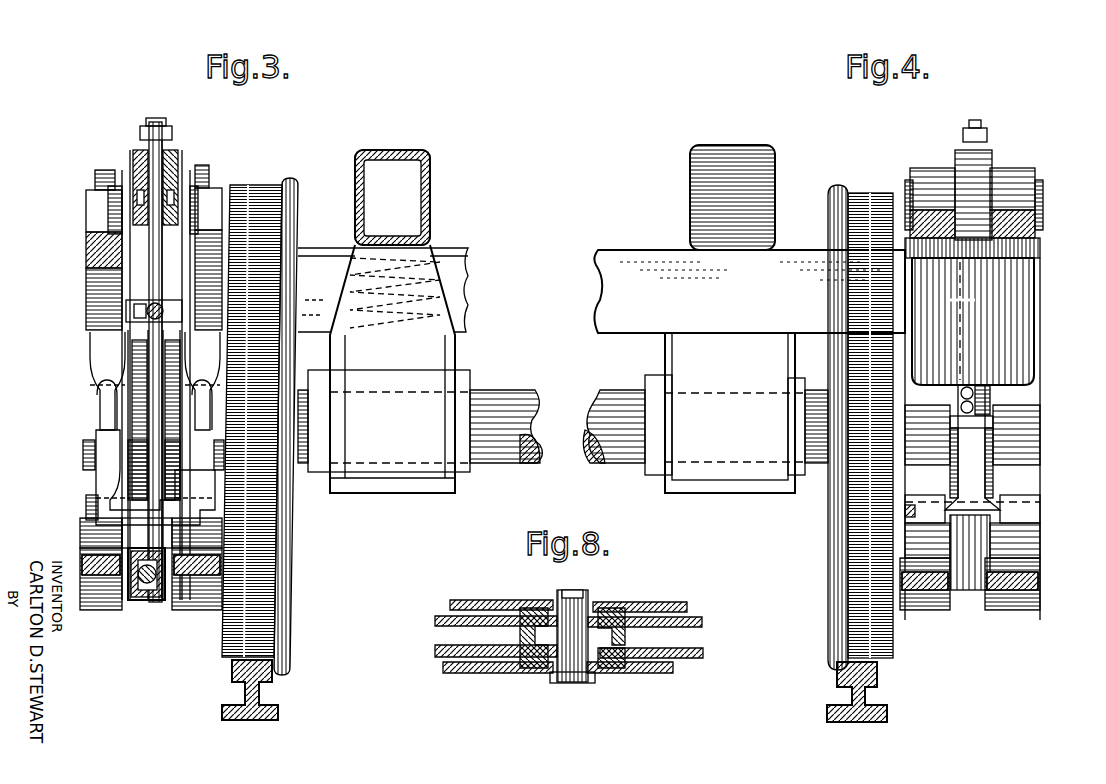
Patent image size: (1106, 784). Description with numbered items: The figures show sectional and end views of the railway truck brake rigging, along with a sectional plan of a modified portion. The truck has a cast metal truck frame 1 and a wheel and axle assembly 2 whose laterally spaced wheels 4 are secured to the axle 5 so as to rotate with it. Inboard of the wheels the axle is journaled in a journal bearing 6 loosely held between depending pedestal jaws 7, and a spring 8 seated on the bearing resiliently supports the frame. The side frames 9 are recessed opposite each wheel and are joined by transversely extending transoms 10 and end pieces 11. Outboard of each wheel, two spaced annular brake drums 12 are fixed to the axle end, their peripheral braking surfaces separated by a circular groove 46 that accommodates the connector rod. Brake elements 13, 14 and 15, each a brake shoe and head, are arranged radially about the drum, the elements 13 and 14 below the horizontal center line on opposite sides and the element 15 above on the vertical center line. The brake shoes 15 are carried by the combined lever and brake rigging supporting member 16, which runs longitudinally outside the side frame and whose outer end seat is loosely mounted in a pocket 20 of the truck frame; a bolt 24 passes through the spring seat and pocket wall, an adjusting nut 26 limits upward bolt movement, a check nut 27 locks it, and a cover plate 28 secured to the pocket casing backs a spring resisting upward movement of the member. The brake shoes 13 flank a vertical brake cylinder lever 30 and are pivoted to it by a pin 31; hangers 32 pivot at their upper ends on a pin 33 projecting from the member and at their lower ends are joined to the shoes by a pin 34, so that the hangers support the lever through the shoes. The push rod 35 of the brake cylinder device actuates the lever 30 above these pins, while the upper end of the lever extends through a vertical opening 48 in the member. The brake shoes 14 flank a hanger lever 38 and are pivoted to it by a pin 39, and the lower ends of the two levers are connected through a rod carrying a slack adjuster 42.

In FIG. 3, the truck frame 1 is at (384, 150).
In FIG. 8, the truck frame 1 is at (535, 672).
In FIG. 4, the truck frame 1 is at (750, 152).
In FIG. 3, the wheel and axle assembly 2 is at (278, 606).
In FIG. 3, the wheel 4 is at (266, 562).
In FIG. 4, the wheel 4 is at (920, 560).
In FIG. 3, the axle 5 is at (500, 395).
In FIG. 4, the axle 5 is at (605, 395).
In FIG. 3, the journal bearing 6 is at (468, 472).
In FIG. 4, the journal bearing 6 is at (652, 476).
In FIG. 3, the pedestal jaw 7 is at (426, 450).
In FIG. 4, the pedestal jaw 7 is at (730, 455).
In FIG. 3, the spring 8 is at (462, 262).
In FIG. 3, the side frame 9 is at (357, 160).
In FIG. 4, the side frame 9 is at (695, 186).
In FIG. 3, the transom 10 is at (460, 290).
In FIG. 4, the end piece 11 is at (668, 265).
In FIG. 3, the brake drum 12 is at (112, 600).
In FIG. 4, the brake drum 12 is at (925, 602).
In FIG. 3, the brake element 13 is at (86, 528).
In FIG. 4, the brake element 14 is at (1020, 545).
In FIG. 3, the brake element 15 is at (88, 240).
In FIG. 4, the brake element 15 is at (925, 185).
In FIG. 3, the combined lever and brake rigging supporting member 16 is at (142, 160).
In FIG. 8, the combined lever and brake rigging supporting member 16 is at (690, 615).
In FIG. 4, the combined lever and brake rigging supporting member 16 is at (978, 170).
In FIG. 4, the pocket 20 is at (1010, 285).
In FIG. 4, the bolt 24 is at (985, 440).
In FIG. 4, the adjusting nut 26 is at (975, 392).
In FIG. 4, the check nut 27 is at (985, 410).
In FIG. 4, the cover plate 28 is at (1036, 240).
In FIG. 3, the brake cylinder lever 30 is at (150, 495).
In FIG. 3, the pin 31 is at (88, 500).
In FIG. 3, the hanger 32 is at (132, 314).
In FIG. 3, the pin 33 is at (120, 208).
In FIG. 3, the pin 34 is at (86, 452).
In FIG. 3, the push rod 35 is at (124, 300).
In FIG. 4, the hanger lever 38 is at (968, 478).
In FIG. 4, the pin 39 is at (1027, 512).
In FIG. 3, the slack adjuster 42 is at (148, 602).
In FIG. 3, the circular groove 46 is at (190, 348).
In FIG. 4, the circular groove 46 is at (990, 452).
In FIG. 3, the opening 48 is at (176, 158).